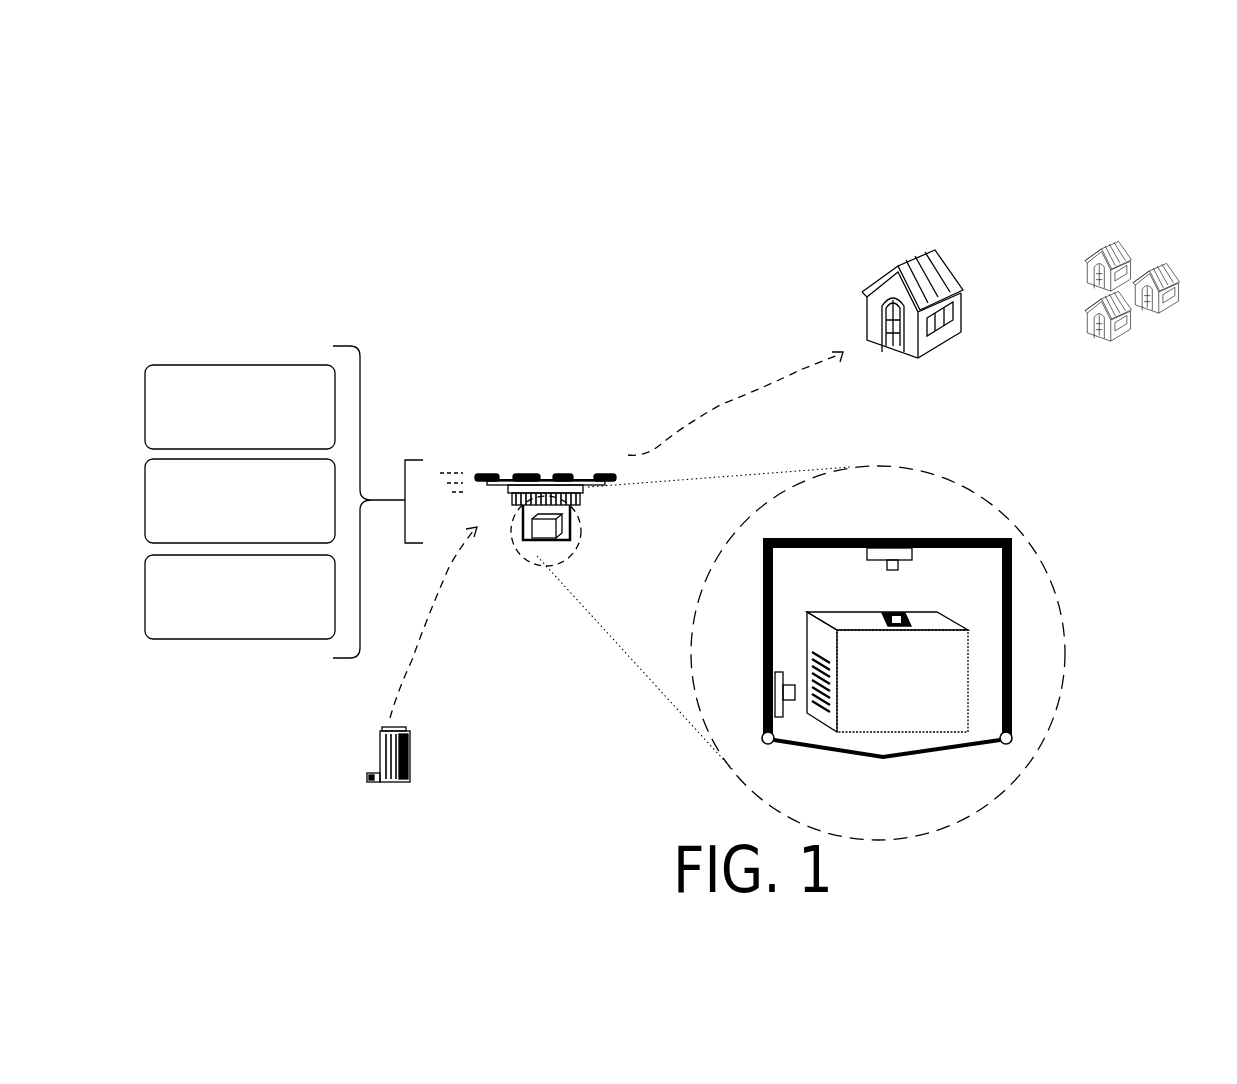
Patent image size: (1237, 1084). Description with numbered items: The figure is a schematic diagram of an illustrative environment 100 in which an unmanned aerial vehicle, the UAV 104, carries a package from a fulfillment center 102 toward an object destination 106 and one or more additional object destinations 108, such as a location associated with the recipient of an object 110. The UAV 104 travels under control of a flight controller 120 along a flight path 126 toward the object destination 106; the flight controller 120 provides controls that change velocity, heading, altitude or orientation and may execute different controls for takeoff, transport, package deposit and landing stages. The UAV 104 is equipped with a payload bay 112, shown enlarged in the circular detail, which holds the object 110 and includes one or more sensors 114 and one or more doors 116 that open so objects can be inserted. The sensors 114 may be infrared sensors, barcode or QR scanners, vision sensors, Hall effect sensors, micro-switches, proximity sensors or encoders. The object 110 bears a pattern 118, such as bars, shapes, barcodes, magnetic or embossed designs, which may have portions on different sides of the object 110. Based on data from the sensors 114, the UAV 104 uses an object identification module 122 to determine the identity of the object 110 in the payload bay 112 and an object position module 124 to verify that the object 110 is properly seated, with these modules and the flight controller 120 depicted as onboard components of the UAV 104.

The environment 100 is at (1160, 160).
The fulfillment center 102 is at (409, 679).
The UAV 104 is at (530, 465).
The object destination 106 is at (909, 342).
The additional object destinations 108 is at (1140, 323).
The object 110 is at (970, 625).
The payload bay 112 is at (752, 584).
The sensors 114 is at (782, 668).
The doors 116 is at (973, 750).
The pattern 118 is at (833, 685).
The flight controller 120 is at (240, 407).
The object identification module 122 is at (240, 501).
The object position module 124 is at (240, 597).
The flight path 126 is at (723, 402).